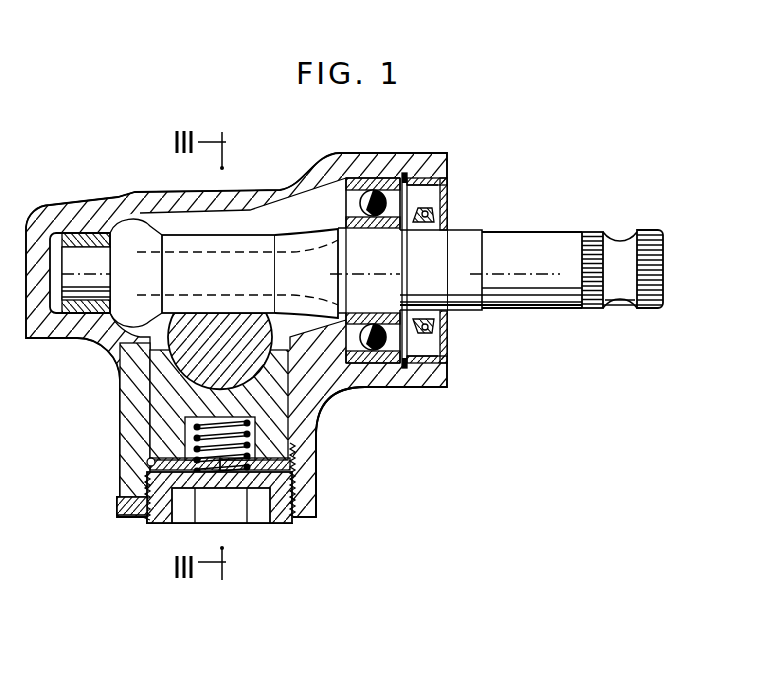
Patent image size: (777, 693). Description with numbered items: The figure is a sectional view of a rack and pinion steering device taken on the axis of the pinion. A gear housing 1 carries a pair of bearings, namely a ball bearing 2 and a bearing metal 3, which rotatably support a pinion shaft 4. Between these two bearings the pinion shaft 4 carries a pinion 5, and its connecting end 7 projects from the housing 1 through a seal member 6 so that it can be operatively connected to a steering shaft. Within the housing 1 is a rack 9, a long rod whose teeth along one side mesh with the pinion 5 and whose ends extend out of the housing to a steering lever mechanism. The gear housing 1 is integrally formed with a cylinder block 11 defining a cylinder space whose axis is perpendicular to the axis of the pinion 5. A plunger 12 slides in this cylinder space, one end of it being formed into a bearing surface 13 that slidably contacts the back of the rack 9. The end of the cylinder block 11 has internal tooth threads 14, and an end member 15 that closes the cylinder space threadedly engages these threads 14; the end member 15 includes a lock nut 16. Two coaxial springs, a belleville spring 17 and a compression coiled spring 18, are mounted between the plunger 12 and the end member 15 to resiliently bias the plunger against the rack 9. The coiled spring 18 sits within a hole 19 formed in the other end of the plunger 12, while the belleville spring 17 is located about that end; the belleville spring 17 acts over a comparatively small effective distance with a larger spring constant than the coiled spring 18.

The gear housing 1 is at (137, 192).
The ball bearing 2 is at (364, 180).
The bearing metal 3 is at (85, 233).
The pinion shaft 4 is at (510, 308).
The pinion 5 is at (178, 236).
The seal member 6 is at (443, 192).
The connecting end 7 is at (648, 231).
The rack 9 is at (193, 364).
The cylinder block 11 is at (312, 412).
The plunger 12 is at (157, 426).
The bearing surface 13 is at (122, 370).
The internal tooth threads 14 is at (294, 487).
The end member 15 is at (163, 523).
The lock nut 16 is at (123, 516).
The belleville spring 17 is at (149, 462).
The compression coiled spring 18 is at (256, 458).
The hole 19 is at (252, 441).